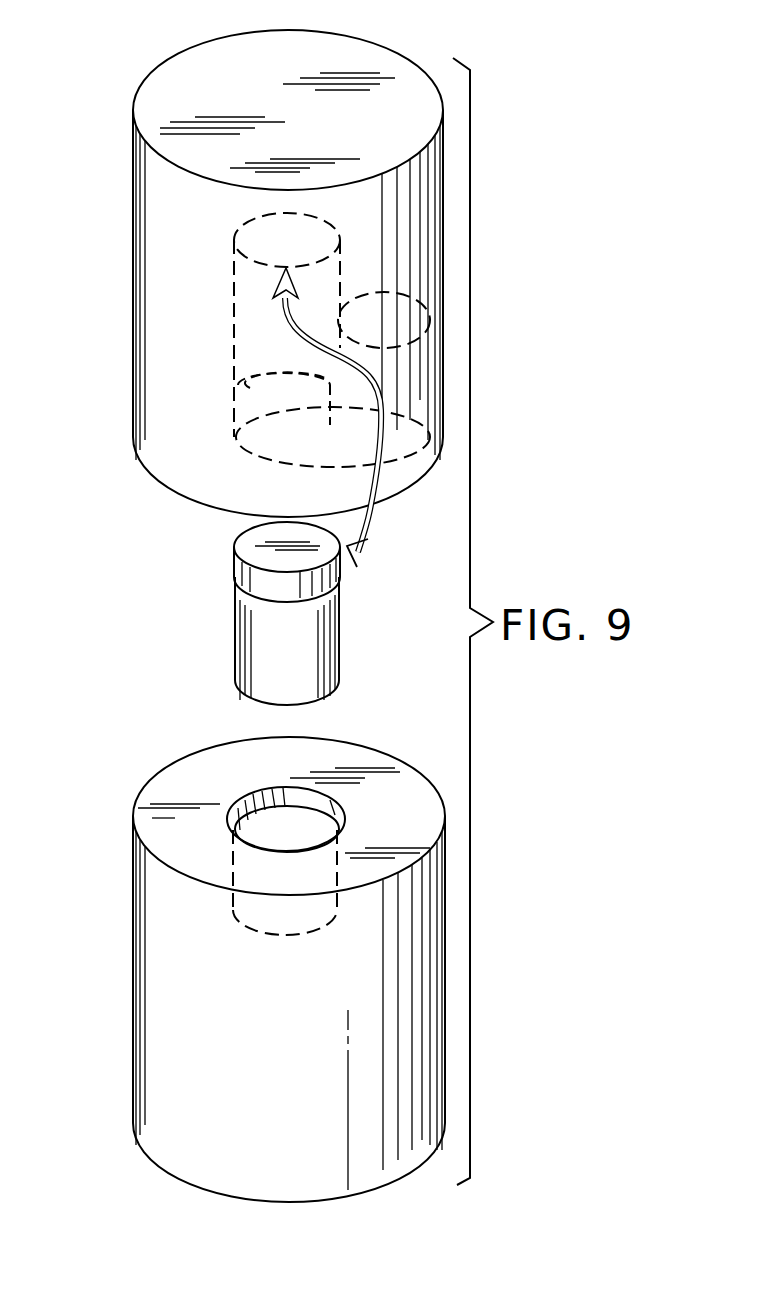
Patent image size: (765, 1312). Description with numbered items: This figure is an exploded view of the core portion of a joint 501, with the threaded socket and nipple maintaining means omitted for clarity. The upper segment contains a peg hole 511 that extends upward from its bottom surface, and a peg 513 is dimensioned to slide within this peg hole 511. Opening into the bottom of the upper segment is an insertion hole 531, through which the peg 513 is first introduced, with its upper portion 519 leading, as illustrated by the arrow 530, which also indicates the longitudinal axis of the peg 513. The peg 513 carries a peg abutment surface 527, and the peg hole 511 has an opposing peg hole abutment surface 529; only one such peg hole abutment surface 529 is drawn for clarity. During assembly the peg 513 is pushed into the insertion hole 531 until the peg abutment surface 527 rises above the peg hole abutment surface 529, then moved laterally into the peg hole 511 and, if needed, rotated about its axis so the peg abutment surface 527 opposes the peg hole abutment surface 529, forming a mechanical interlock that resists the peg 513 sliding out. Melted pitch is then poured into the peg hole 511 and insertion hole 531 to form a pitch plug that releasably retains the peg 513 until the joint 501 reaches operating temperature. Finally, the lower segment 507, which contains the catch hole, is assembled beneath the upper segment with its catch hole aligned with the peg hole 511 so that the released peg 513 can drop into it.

The joint 501 is at (152, 222).
The peg hole 511 is at (258, 318).
The peg hole abutment surface 529 is at (277, 378).
The insertion hole 531 is at (410, 437).
The arrow 530 is at (362, 553).
The upper portion of the peg 519 is at (242, 578).
The peg abutment surface 527 is at (307, 598).
The peg 513 is at (270, 635).
The lower segment 507 is at (200, 1003).